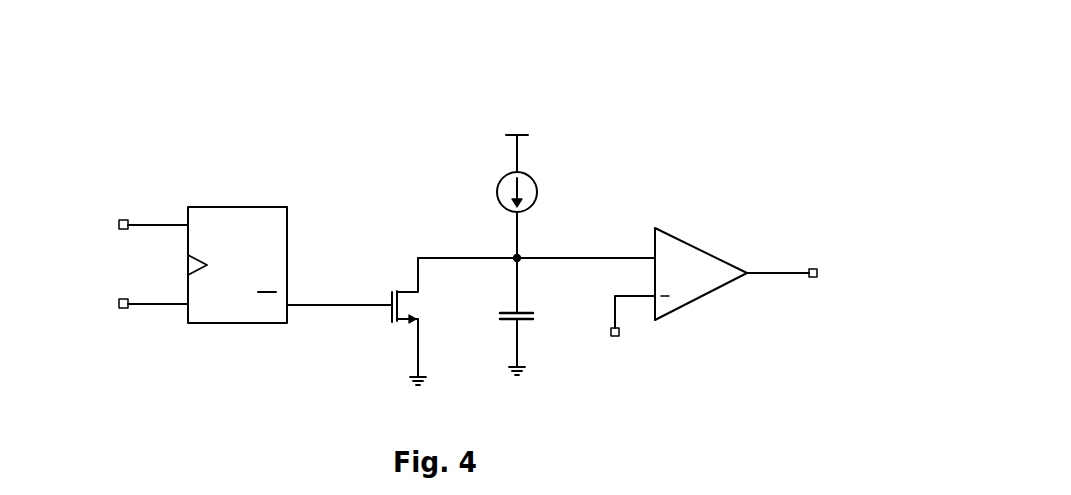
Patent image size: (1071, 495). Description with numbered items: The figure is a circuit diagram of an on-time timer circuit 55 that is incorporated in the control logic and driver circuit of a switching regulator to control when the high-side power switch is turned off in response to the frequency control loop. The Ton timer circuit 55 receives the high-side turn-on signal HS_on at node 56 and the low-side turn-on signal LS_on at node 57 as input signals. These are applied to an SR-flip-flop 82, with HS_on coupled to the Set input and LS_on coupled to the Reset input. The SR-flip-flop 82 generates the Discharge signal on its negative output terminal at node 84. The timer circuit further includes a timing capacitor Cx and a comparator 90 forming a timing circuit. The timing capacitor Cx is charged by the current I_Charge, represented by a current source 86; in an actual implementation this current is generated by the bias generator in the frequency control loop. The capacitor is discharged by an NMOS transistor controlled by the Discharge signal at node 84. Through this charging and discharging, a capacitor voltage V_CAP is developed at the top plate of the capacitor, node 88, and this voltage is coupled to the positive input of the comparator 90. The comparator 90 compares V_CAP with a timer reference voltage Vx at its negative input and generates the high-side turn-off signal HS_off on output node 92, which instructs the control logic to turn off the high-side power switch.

The Ton timer circuit 55 is at (770, 121).
The SR-flip-flop 82 is at (255, 207).
The node 56 is at (155, 226).
The node 57 is at (155, 305).
The node 84 is at (358, 306).
The current source 86 is at (496, 191).
The node 88 is at (515, 261).
The comparator 90 is at (696, 294).
The output node 92 is at (781, 274).